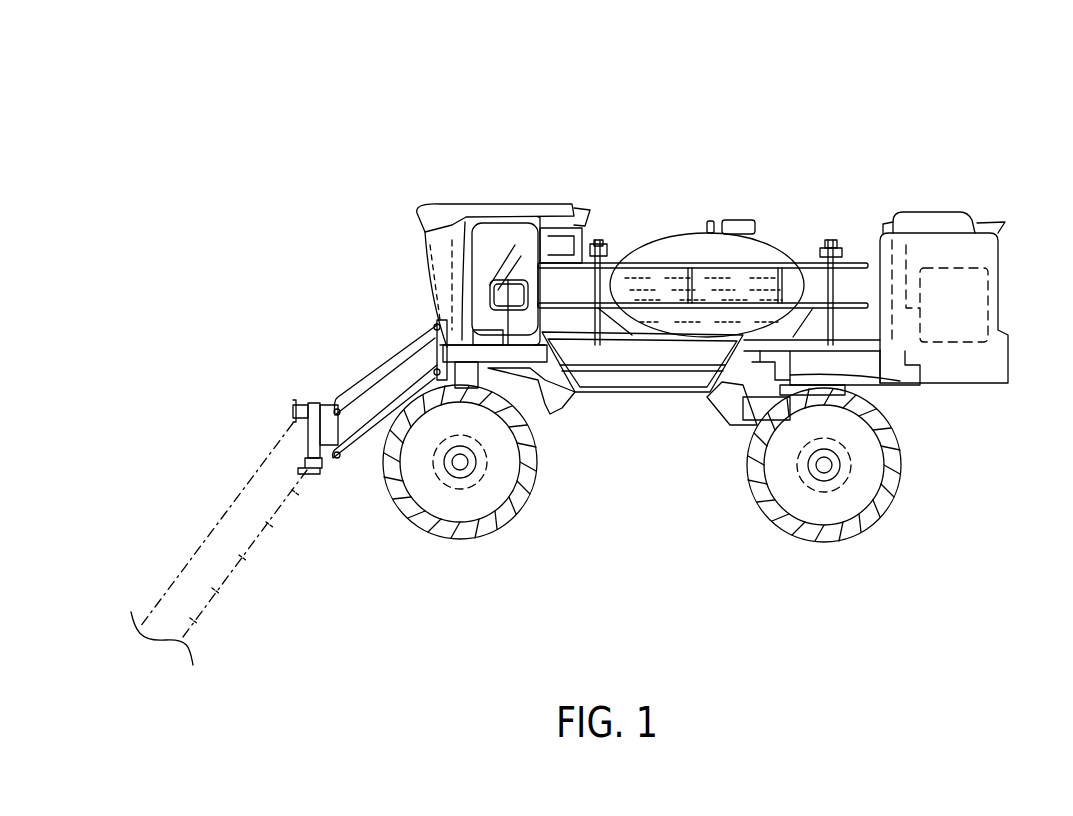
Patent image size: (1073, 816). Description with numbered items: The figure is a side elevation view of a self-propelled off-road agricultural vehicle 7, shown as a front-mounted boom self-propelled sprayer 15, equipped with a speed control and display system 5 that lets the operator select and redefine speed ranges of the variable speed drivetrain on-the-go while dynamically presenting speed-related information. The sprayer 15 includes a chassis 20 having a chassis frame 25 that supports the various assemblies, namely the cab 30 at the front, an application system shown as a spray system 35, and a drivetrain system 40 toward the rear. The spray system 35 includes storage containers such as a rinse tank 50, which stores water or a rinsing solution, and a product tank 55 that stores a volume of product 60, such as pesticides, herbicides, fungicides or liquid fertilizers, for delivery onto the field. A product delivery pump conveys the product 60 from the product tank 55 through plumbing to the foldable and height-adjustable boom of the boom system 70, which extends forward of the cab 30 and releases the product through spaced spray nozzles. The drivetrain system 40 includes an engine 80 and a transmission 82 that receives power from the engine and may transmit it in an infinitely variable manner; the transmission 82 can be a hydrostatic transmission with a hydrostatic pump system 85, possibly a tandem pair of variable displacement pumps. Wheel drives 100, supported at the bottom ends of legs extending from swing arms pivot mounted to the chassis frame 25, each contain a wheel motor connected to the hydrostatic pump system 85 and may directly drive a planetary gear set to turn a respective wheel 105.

The self-propelled sprayer 15 is at (757, 101).
The speed control and display system 5 is at (451, 257).
The self-propelled off-road agricultural vehicle 7 is at (876, 144).
The cab 30 is at (505, 206).
The product tank 55 is at (683, 226).
The product 60 is at (642, 288).
The spray system 35 is at (793, 217).
The rinse tank 50 is at (836, 246).
The engine 80 is at (1000, 245).
The transmission 82 is at (964, 291).
The hydrostatic pump system 85 is at (897, 318).
The drivetrain system 40 is at (928, 356).
The chassis 20 is at (668, 398).
The chassis frame 25 is at (722, 420).
The boom system 70 is at (172, 546).
The wheel drive 100 is at (492, 462).
The wheel 105 is at (496, 538).